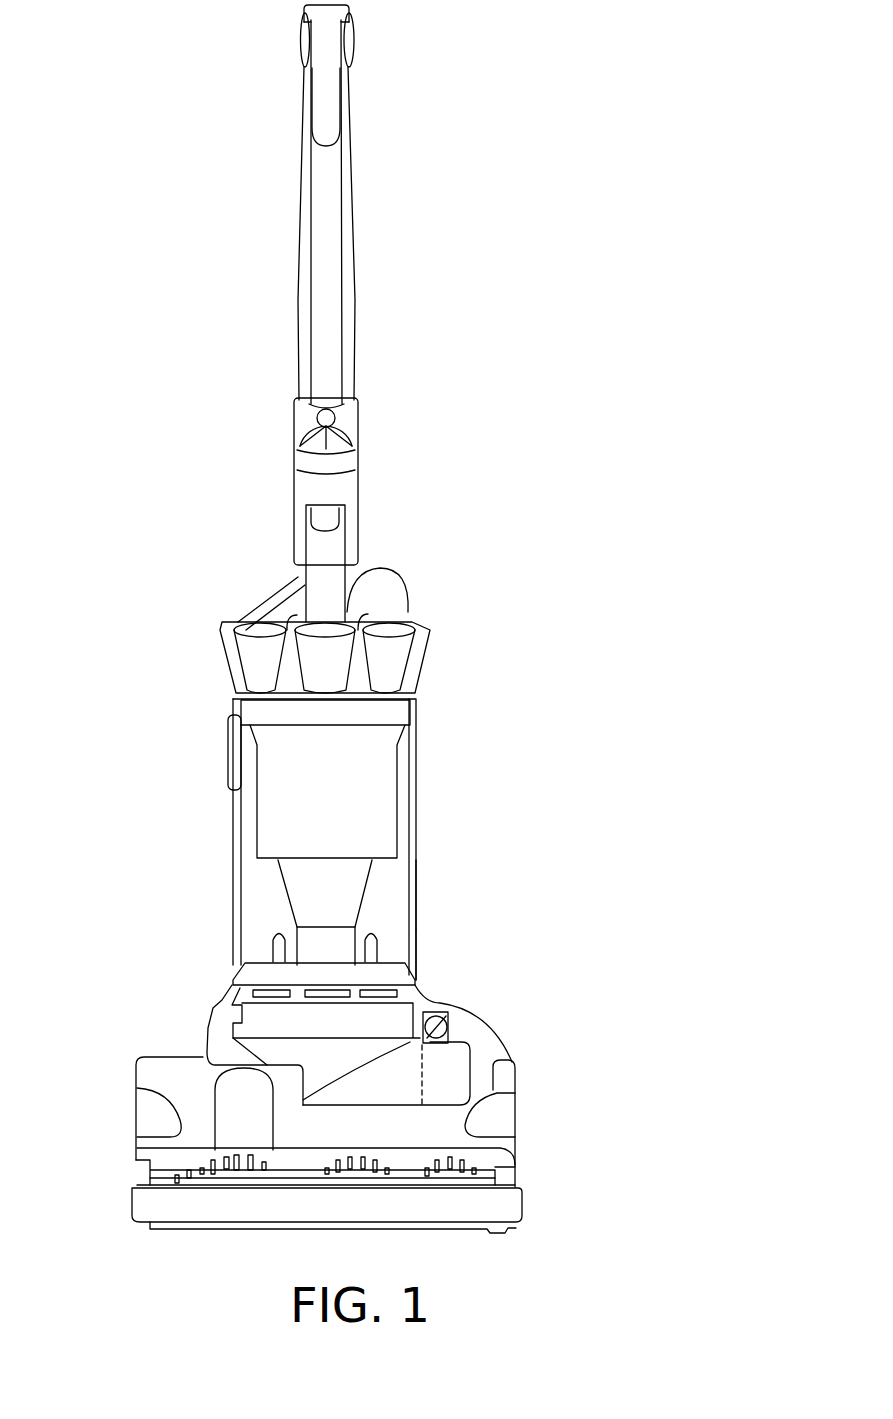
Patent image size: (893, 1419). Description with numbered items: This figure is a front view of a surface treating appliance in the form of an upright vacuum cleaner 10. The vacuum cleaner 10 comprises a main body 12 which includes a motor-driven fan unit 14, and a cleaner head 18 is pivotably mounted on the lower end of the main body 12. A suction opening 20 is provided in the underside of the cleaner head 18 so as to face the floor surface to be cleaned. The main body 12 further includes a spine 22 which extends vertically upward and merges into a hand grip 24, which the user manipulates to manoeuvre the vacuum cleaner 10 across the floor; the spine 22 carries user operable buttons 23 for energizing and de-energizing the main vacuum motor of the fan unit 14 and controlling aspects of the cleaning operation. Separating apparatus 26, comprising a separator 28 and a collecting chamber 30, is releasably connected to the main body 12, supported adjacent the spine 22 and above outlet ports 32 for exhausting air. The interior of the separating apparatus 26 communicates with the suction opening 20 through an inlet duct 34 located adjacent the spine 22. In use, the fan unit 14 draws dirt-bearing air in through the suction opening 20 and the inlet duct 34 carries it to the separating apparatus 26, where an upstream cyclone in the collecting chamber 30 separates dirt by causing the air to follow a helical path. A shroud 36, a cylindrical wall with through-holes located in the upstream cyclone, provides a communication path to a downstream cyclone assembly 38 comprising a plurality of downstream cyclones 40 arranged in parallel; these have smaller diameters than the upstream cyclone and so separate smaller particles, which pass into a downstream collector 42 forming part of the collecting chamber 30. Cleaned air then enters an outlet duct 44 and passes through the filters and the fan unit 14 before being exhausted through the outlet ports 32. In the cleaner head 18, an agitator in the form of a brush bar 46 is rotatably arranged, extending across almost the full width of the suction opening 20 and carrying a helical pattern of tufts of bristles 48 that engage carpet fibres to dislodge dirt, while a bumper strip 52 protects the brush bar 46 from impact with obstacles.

The vacuum cleaner 10 is at (200, 783).
The main body 12 is at (455, 1055).
The motor-driven fan unit 14 is at (405, 1090).
The cleaner head 18 is at (158, 1073).
The suction opening 20 is at (447, 1228).
The spine 22 is at (294, 493).
The user operable buttons 23 is at (348, 424).
The hand grip 24 is at (318, 103).
The separating apparatus 26 is at (436, 846).
The separator 28 is at (414, 771).
The collecting chamber 30 is at (410, 947).
The outlet ports 32 is at (245, 980).
The inlet duct 34 is at (233, 846).
The shroud 36 is at (360, 827).
The downstream cyclone assembly 38 is at (417, 660).
The downstream cyclones 40 is at (460, 617).
The downstream collector 42 is at (320, 923).
The outlet duct 44 is at (410, 913).
The brush bar 46 is at (185, 1178).
The bristles 48 is at (212, 1172).
The bumper strip 52 is at (377, 1207).